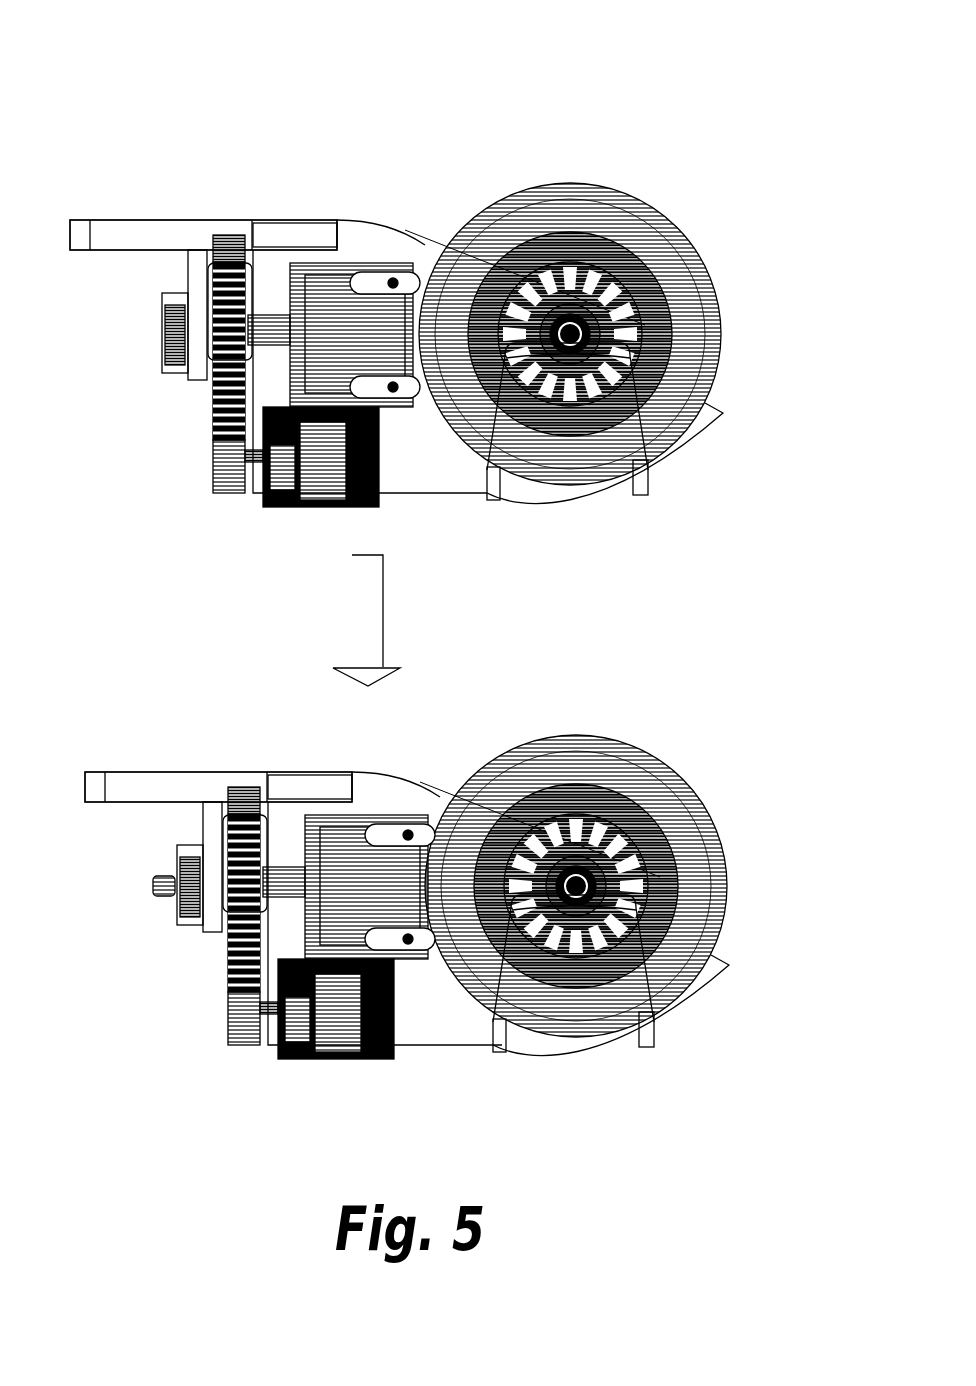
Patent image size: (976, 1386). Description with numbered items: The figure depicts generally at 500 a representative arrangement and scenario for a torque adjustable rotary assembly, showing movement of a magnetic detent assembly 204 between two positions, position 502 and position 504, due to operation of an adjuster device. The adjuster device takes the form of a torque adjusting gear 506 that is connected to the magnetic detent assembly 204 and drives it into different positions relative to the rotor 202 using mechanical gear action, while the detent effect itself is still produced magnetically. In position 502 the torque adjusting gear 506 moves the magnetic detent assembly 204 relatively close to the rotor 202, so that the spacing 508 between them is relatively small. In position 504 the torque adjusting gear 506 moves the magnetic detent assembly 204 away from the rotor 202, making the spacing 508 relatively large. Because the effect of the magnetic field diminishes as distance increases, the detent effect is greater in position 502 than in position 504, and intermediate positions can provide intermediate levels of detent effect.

The representative arrangement and scenario for a torque adjustable rotary assembly 500 is at (136, 63).
The position 502 is at (198, 200).
The position 504 is at (207, 742).
The rotor 202 is at (560, 217).
The magnetic detent assembly 204 is at (339, 327).
The torque adjusting gear 506 is at (205, 410).
The spacing 508 is at (420, 388).